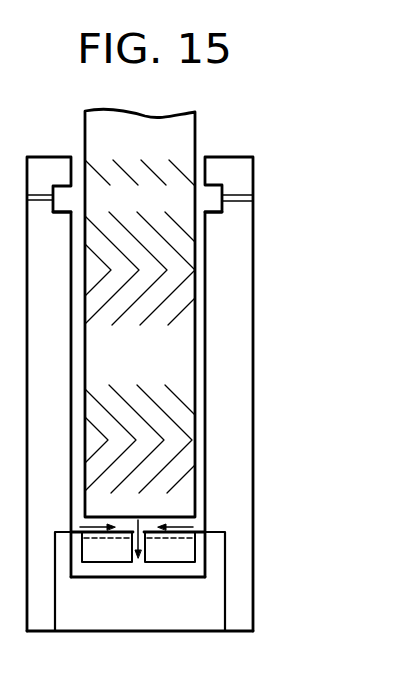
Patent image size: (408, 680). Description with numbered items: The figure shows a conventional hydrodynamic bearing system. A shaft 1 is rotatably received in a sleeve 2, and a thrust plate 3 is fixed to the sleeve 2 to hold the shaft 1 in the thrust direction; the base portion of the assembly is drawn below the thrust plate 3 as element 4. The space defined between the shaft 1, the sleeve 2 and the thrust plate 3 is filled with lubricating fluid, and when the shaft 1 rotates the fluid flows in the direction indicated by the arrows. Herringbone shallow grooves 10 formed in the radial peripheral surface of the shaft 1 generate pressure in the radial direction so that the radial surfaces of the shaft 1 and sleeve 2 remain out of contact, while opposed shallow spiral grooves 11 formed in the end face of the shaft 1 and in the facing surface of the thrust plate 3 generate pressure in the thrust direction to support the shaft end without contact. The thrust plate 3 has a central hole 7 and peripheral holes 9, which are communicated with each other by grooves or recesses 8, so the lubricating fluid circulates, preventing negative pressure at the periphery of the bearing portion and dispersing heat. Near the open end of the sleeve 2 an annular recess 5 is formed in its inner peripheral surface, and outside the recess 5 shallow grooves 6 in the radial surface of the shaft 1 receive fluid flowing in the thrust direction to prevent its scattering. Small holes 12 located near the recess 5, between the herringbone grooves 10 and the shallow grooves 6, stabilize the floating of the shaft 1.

The shaft 1 is at (178, 135).
The sleeve 2 is at (243, 277).
The thrust plate 3 is at (182, 550).
The housing bottom 4 is at (207, 617).
The annular recess 5 is at (215, 193).
The shallow grooves 6 is at (178, 170).
The central hole 7 is at (139, 530).
The grooves or recesses 8 is at (162, 577).
The peripheral holes 9 is at (197, 563).
The herringbone shallow grooves 10 is at (175, 391).
The shallow spiral grooves 11 is at (200, 537).
The small holes 12 is at (225, 203).